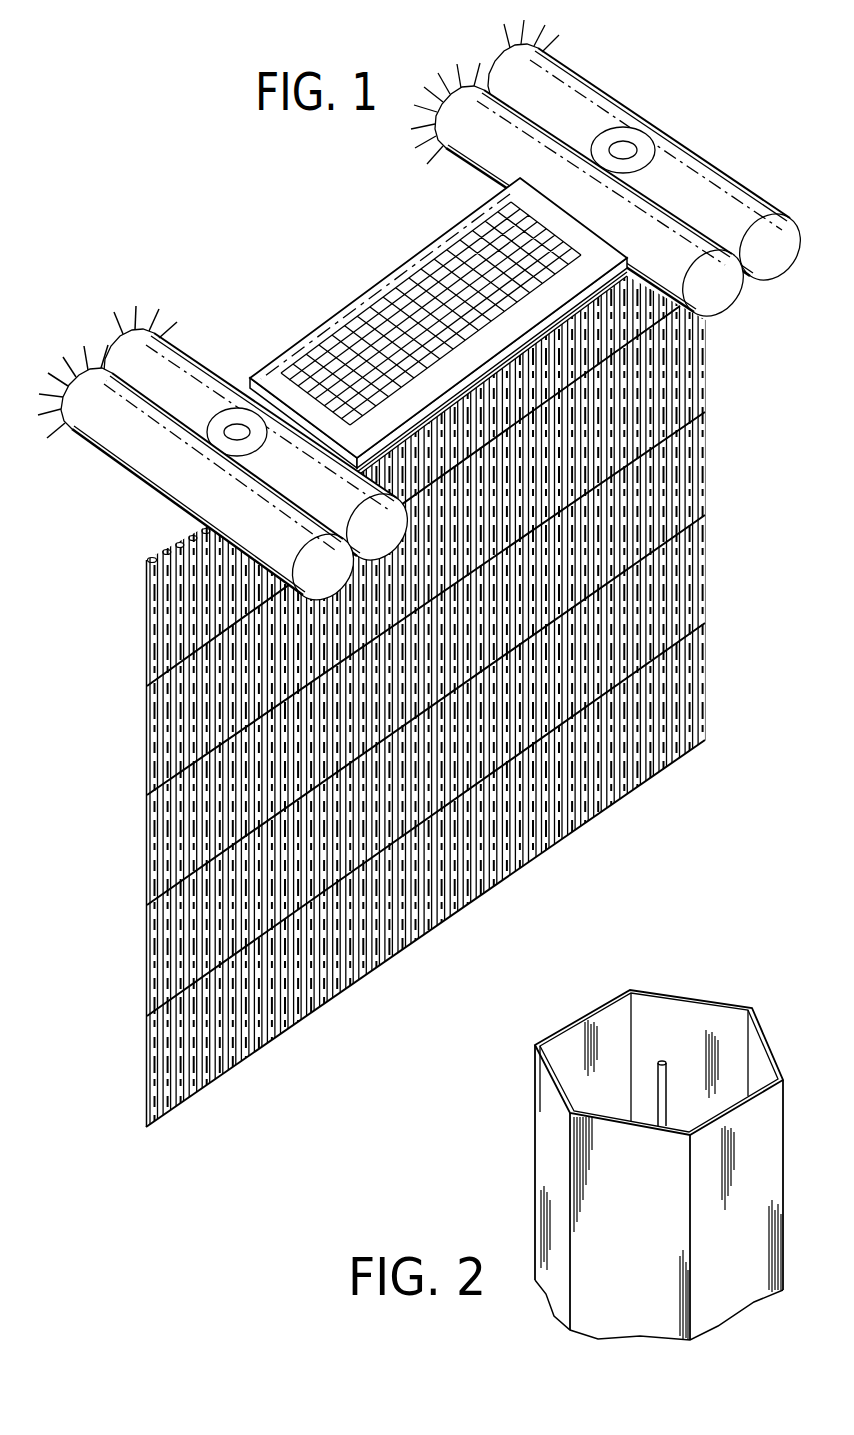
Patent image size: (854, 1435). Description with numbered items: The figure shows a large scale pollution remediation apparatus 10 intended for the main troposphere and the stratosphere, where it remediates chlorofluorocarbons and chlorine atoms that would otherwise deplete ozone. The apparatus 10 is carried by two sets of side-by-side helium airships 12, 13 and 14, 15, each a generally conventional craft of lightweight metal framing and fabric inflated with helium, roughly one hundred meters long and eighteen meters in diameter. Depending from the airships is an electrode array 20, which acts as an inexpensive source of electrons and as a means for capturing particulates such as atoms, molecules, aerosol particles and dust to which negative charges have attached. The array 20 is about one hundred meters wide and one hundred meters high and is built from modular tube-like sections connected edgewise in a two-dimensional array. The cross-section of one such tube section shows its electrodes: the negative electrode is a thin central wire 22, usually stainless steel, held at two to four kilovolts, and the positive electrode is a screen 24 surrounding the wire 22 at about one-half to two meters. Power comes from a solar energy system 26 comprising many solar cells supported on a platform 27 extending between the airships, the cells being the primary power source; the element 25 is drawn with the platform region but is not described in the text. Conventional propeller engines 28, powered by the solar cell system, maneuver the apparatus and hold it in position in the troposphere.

In FIG. 1, the large scale apparatus 10 is at (264, 246).
In FIG. 1, the helium airship 12 is at (103, 460).
In FIG. 1, the helium airship 13 is at (197, 348).
In FIG. 1, the helium airship 14 is at (462, 160).
In FIG. 1, the helium airship 15 is at (596, 86).
In FIG. 1, the electrode array 20 is at (96, 782).
In FIG. 2, the central wire 22 is at (663, 1060).
In FIG. 2, the screen 24 is at (592, 1012).
In FIG. 1, the plate 25 is at (438, 327).
In FIG. 1, the solar energy system 26 is at (392, 300).
In FIG. 1, the platform 27 is at (312, 337).
In FIG. 1, the propeller engine 28 is at (68, 368).